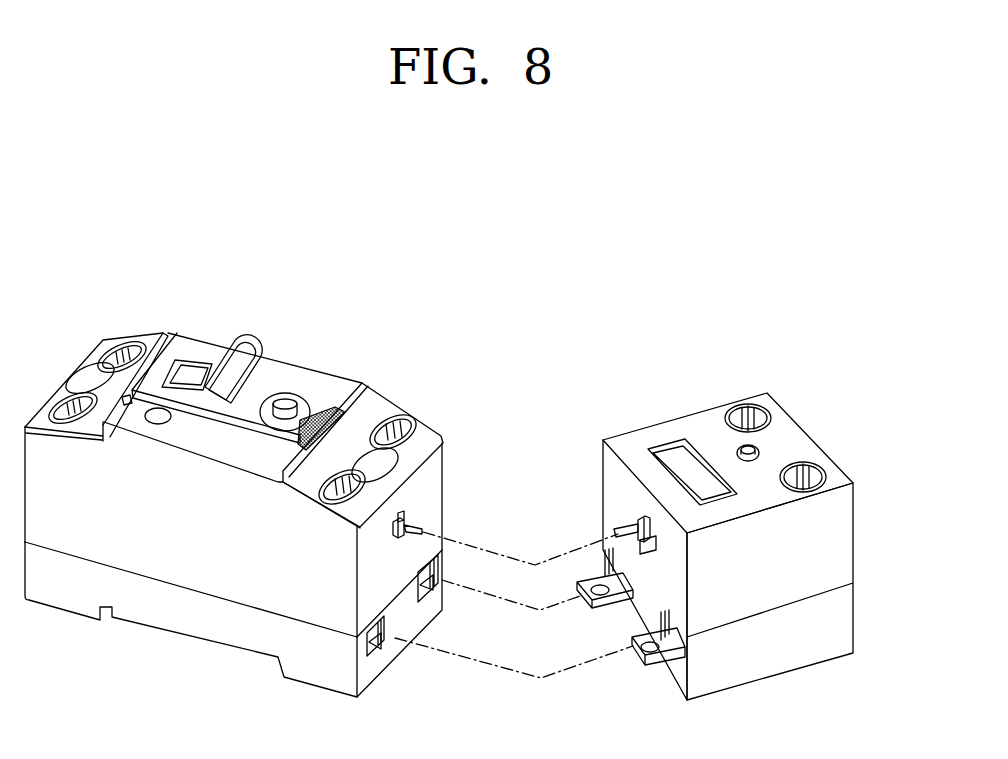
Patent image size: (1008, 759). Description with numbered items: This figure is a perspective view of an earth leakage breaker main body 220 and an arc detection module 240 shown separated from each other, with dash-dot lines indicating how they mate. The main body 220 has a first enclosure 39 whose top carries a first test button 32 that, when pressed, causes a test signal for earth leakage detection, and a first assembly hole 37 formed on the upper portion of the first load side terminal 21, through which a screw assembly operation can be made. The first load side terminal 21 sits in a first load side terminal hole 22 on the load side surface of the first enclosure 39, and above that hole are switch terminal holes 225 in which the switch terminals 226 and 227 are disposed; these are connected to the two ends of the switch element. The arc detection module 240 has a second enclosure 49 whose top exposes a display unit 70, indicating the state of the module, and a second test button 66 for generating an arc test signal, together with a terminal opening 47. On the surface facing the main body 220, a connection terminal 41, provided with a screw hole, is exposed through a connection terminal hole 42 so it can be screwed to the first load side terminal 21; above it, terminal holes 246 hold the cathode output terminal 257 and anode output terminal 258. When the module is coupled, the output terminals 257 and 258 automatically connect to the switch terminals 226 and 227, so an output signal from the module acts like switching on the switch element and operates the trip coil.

The main body 220 is at (123, 629).
The first enclosure 39 is at (212, 576).
The first assembly hole 37 is at (406, 436).
The first test button 32 is at (284, 403).
The first load side terminal 21 is at (379, 633).
The first load side terminal hole 22 is at (370, 650).
The switch terminal holes 225 is at (405, 521).
The cathode switch terminal 226 is at (418, 529).
The anode switch terminal 227 is at (400, 518).
The arc detection module 240 is at (609, 421).
The second enclosure 49 is at (840, 537).
The display unit 70 is at (674, 454).
The second test button 66 is at (749, 448).
The terminal hole 47 is at (810, 477).
The terminal holes 246 is at (637, 520).
The cathode output terminal 257 is at (620, 530).
The anode output terminal 258 is at (655, 545).
The connection terminal 41 is at (663, 652).
The connection terminal hole 42 is at (677, 660).